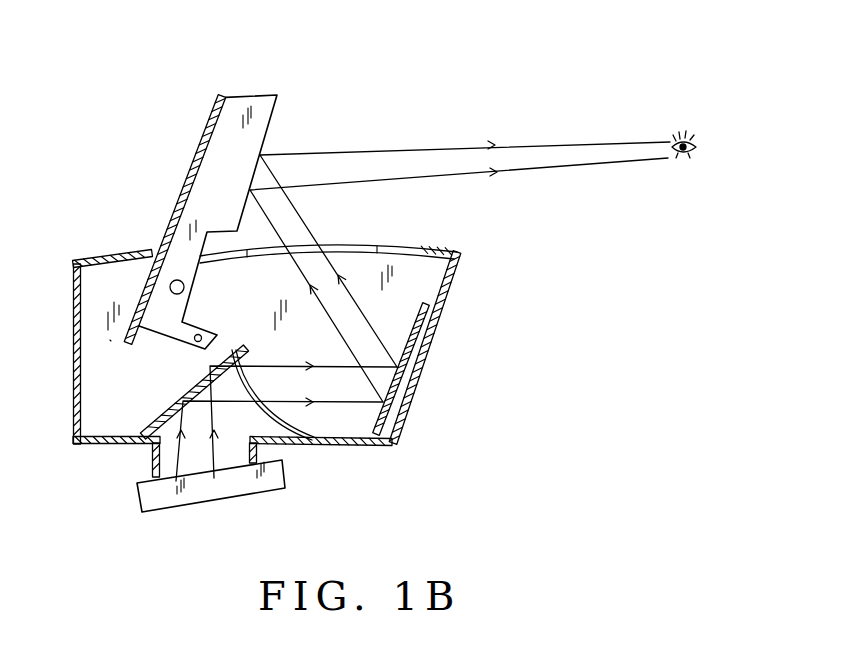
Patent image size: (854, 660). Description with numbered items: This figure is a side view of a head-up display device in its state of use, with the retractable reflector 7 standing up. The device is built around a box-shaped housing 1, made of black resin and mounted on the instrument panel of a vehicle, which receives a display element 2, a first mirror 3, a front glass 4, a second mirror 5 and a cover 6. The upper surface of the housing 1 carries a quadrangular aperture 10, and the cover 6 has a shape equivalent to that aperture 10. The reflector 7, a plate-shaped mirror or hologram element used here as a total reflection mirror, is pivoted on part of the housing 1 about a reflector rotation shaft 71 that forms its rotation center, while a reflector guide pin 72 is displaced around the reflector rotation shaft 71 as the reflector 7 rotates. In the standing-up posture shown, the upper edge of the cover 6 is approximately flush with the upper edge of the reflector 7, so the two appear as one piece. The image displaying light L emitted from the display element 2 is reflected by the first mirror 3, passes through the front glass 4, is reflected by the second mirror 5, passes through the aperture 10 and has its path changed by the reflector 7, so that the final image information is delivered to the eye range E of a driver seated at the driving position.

The housing 1 is at (73, 338).
The display element 2 is at (143, 497).
The first mirror 3 is at (165, 402).
The front glass 4 is at (287, 413).
The second mirror 5 is at (425, 325).
The cover 6 is at (212, 117).
The reflector 7 is at (265, 95).
The aperture 10 is at (367, 248).
The reflector rotation shaft 71 is at (175, 280).
The reflector guide pin 72 is at (193, 341).
The eye range E is at (687, 162).
The image displaying light L is at (210, 447).